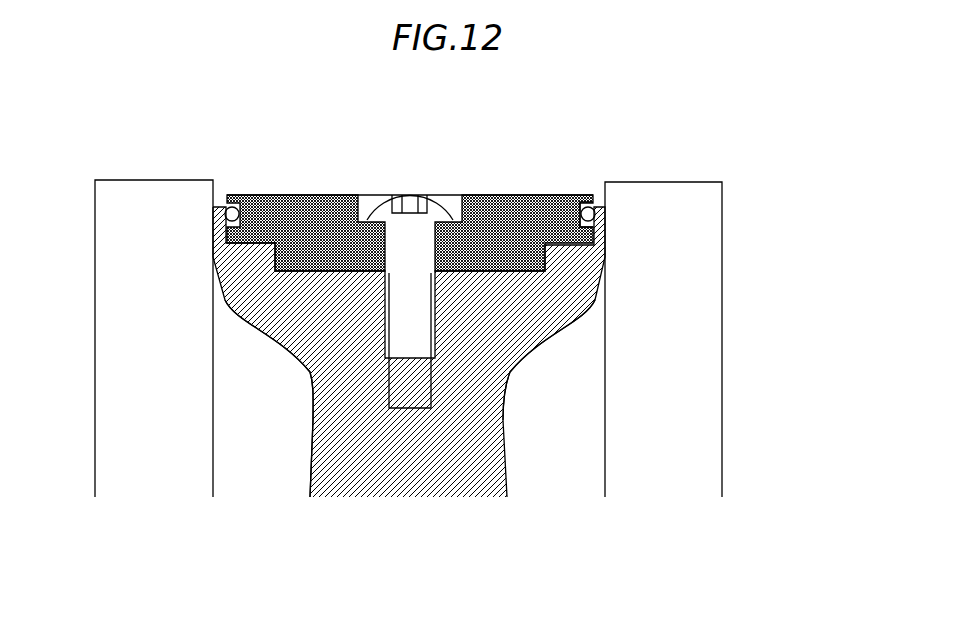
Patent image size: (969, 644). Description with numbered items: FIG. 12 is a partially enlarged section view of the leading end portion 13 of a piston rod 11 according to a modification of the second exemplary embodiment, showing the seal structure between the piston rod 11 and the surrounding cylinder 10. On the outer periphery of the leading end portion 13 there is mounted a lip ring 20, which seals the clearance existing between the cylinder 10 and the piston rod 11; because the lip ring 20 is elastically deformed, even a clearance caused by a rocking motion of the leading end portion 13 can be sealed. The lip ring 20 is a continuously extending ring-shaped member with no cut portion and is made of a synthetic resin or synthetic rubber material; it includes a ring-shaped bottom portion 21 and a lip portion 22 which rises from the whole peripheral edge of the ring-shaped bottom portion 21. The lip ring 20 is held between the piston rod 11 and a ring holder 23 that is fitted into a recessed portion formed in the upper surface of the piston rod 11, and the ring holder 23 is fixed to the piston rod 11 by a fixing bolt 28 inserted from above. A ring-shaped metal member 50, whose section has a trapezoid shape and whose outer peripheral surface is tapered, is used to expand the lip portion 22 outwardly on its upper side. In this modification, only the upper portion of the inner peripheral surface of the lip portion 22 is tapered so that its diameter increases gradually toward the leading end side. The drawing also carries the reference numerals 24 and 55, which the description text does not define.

The cylinder 10 is at (685, 320).
The piston rod 11 is at (262, 462).
The leading end portion 13 is at (512, 333).
The lip ring 20 is at (544, 346).
The ring-shaped bottom portion 21 is at (596, 267).
The lip portion 22 is at (603, 231).
The ring holder 23 is at (493, 200).
The seal groove 24 is at (581, 214).
The fixing bolt 28 is at (437, 205).
The ring-shaped metal member 50 is at (592, 195).
The seal ring 55 is at (227, 238).